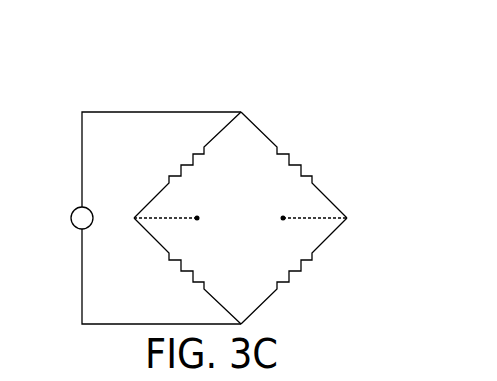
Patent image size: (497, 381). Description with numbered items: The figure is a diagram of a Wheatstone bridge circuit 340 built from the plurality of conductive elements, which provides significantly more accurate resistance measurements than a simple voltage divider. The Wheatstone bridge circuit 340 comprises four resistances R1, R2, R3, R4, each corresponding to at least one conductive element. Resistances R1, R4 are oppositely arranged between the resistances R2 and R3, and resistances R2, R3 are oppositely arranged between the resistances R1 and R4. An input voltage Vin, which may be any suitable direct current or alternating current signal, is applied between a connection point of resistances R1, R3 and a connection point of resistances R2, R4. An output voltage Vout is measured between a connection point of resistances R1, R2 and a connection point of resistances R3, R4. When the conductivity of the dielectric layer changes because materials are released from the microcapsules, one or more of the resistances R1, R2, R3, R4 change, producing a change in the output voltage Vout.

The Wheatstone bridge circuit 340 is at (277, 47).
The resistance R1 is at (187, 165).
The resistance R2 is at (187, 271).
The resistance R3 is at (294, 165).
The resistance R4 is at (294, 271).